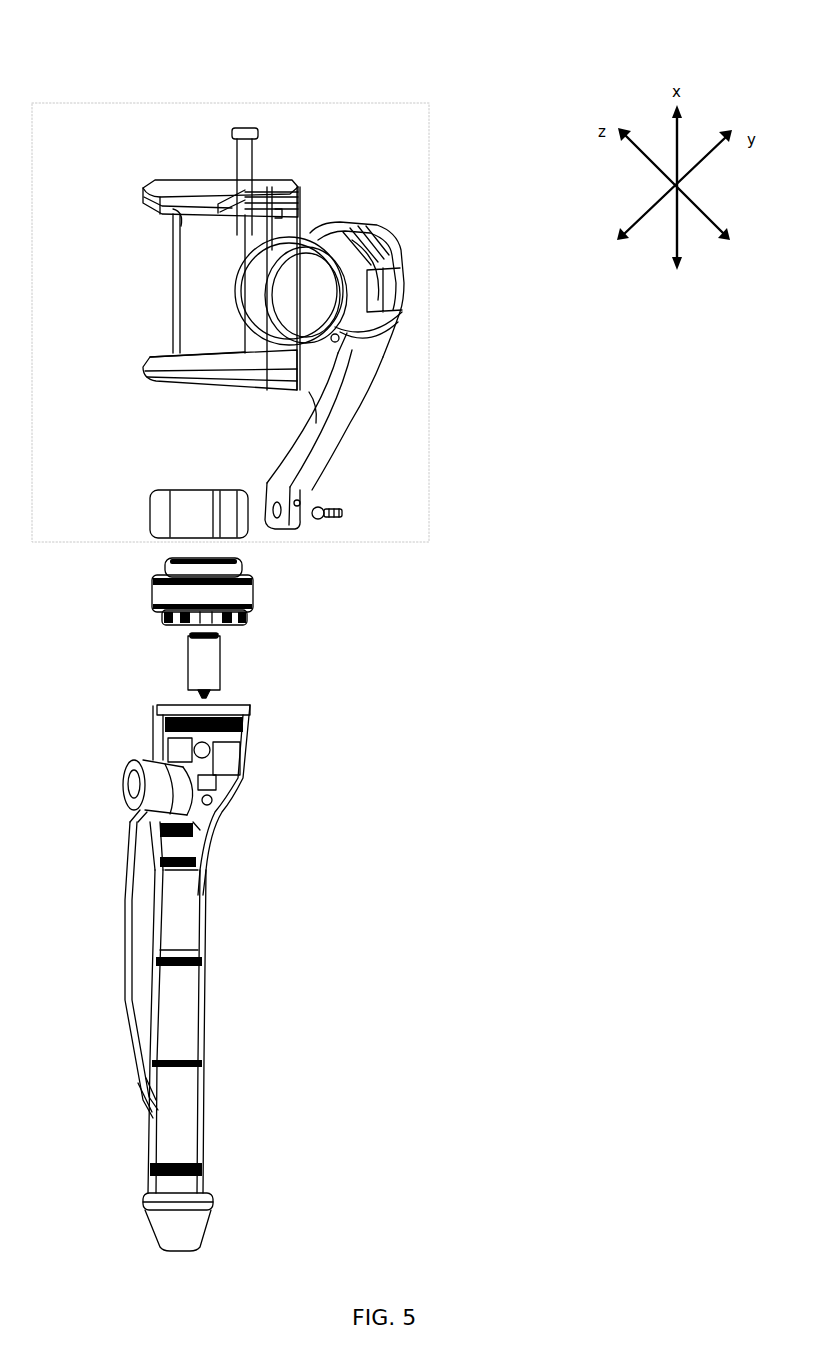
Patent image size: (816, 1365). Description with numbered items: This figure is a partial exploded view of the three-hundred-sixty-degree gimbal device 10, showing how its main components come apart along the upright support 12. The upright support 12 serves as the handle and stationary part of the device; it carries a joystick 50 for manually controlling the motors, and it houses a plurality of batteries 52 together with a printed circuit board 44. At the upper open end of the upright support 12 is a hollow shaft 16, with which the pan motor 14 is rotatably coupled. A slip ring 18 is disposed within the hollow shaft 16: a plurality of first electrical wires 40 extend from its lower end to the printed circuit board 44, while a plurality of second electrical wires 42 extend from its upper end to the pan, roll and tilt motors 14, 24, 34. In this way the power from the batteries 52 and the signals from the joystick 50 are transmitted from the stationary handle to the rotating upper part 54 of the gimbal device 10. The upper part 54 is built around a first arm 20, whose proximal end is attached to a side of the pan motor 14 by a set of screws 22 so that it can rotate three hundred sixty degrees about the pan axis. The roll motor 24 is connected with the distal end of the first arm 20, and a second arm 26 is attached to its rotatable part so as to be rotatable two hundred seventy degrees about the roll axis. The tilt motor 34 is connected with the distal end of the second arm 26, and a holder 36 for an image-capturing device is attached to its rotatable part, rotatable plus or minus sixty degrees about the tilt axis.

The 360-degree gimbal device 10 is at (430, 99).
The upright support 12 is at (147, 958).
The pan motor 14 is at (183, 520).
The hollow shaft 16 is at (232, 592).
The slip ring 18 is at (203, 670).
The first arm 20 is at (340, 413).
The set of screws 22 is at (345, 513).
The roll motor 24 is at (365, 228).
The second arm 26 is at (376, 270).
The tilt motor 34 is at (291, 291).
The holder 36 is at (173, 178).
The first electrical wires 40 is at (200, 692).
The second electrical wires 42 is at (190, 635).
The printed circuit board 44 is at (207, 780).
The joystick 50 is at (172, 788).
The batteries 52 is at (175, 932).
The upper part 54 is at (439, 338).